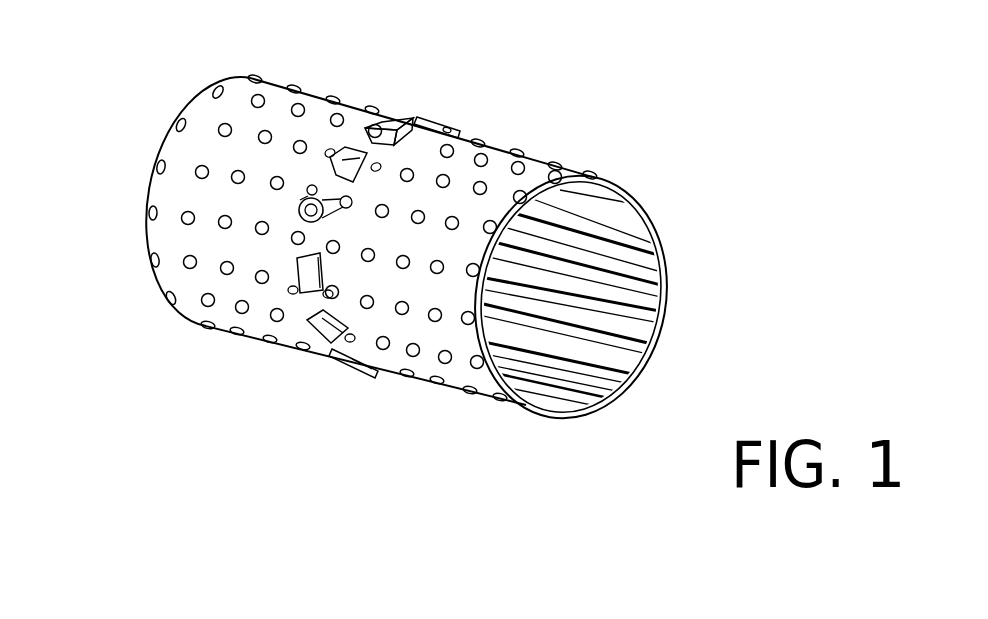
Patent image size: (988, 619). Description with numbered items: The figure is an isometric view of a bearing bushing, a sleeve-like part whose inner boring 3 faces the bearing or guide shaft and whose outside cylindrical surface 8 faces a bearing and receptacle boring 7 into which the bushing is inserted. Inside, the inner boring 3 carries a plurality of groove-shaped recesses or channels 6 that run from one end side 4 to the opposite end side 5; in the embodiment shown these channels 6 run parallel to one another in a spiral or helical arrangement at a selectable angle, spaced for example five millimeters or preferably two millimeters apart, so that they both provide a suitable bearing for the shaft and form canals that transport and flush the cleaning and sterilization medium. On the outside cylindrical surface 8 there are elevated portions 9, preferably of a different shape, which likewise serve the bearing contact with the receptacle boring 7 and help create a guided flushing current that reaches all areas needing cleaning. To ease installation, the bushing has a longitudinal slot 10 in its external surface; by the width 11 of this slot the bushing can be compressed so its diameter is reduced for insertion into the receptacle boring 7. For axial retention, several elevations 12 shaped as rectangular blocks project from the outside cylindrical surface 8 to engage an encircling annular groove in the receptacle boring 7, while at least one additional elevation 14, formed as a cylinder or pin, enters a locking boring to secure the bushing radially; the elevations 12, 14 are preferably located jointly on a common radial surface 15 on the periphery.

The inner boring 3 is at (636, 290).
The end side 4 is at (522, 407).
The opposite end side 5 is at (163, 148).
The groove-shaped recesses or channels 6 is at (628, 362).
The receptacle boring 7 is at (542, 126).
The outside cylindrical surface 8 is at (257, 120).
The elevated portions 9 is at (188, 261).
The longitudinal slot 10 is at (663, 296).
The width 11 is at (684, 324).
The elevations in the shape of rectangular blocks 12 is at (350, 153).
The additional elevation 14 is at (300, 207).
The common radial surface 15 is at (474, 108).